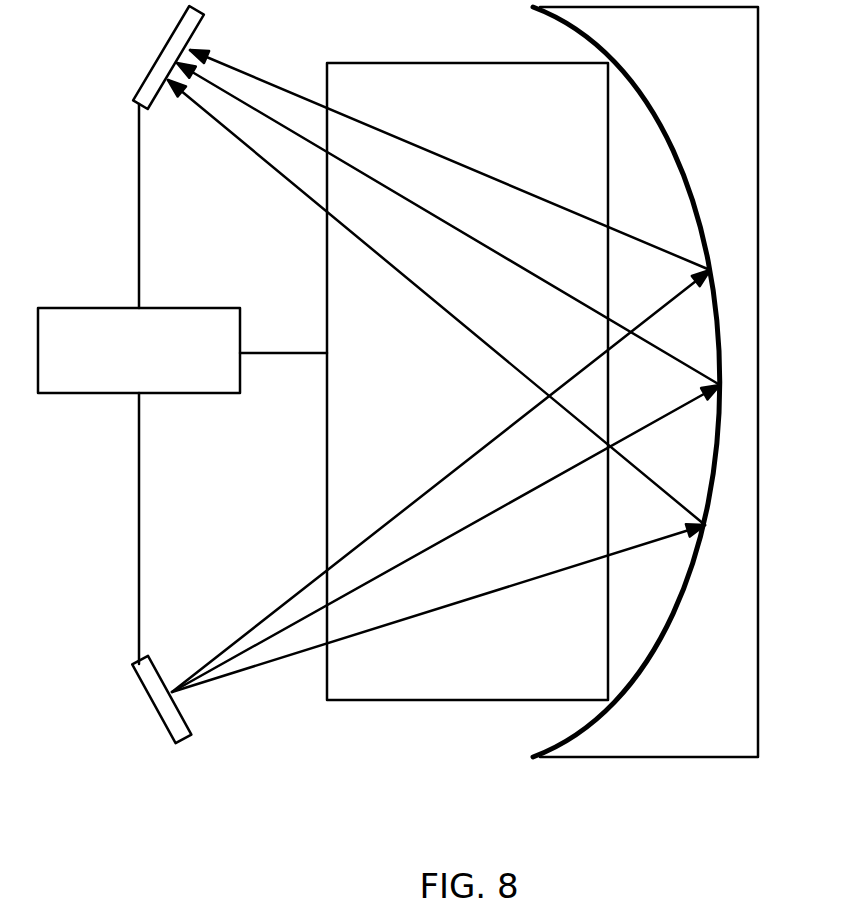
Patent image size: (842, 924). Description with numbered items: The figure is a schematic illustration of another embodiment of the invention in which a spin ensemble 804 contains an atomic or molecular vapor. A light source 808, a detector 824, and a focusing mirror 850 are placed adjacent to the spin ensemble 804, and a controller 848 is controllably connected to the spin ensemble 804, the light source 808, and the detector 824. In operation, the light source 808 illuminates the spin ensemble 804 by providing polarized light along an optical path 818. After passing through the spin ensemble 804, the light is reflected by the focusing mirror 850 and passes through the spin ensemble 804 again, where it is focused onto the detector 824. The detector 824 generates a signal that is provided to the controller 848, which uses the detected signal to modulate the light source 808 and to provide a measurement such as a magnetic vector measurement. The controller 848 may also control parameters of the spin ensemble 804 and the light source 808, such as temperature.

The spin ensemble 804 is at (327, 462).
The light source 808 is at (165, 725).
The optical path 818 is at (293, 652).
The detector 824 is at (157, 56).
The controller 848 is at (182, 384).
The focusing mirror 850 is at (595, 735).